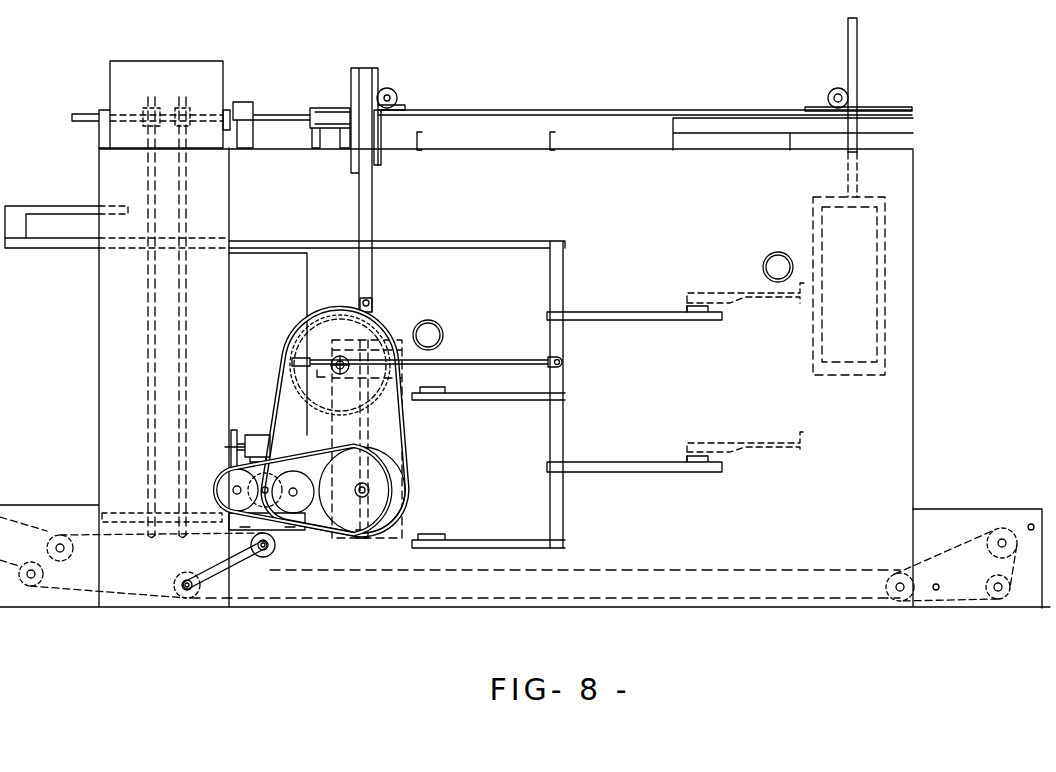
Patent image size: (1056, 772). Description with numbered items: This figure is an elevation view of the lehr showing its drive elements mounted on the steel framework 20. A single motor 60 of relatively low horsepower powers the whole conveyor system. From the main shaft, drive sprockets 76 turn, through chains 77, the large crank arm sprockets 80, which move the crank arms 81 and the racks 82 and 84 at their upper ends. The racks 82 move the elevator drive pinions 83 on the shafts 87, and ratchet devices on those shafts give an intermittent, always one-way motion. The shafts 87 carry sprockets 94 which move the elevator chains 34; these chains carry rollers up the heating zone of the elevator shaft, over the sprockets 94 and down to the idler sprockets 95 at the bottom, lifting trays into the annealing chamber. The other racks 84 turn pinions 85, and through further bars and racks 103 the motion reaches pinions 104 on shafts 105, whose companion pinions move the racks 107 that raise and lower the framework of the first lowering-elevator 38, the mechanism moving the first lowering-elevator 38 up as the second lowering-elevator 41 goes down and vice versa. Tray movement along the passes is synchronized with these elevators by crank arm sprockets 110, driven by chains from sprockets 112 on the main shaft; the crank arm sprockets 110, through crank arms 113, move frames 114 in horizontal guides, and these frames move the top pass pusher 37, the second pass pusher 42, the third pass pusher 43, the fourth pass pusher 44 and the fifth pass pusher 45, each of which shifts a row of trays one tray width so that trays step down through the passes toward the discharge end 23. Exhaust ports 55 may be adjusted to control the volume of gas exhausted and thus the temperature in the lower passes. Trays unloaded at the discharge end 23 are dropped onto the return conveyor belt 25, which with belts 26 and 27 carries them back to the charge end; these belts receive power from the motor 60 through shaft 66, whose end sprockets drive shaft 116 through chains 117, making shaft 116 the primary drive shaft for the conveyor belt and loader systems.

The steel framework 20 is at (556, 138).
The discharge end 23 is at (1009, 505).
The return conveyor belt 25 is at (950, 550).
The conveyor belt 26 is at (701, 570).
The conveyor belt 27 is at (147, 558).
The elevator chains 34 is at (150, 340).
The top pass pusher 37 is at (52, 206).
The first lowering-elevator 38 is at (813, 345).
The second lowering-elevator 41 is at (402, 426).
The second pass pusher 42 is at (720, 292).
The third pass pusher 43 is at (438, 385).
The fourth pass pusher 44 is at (752, 456).
The fifth pass pusher 45 is at (398, 540).
The exhaust ports 55 is at (776, 254).
The motor 60 is at (261, 434).
The shaft 66 is at (276, 546).
The drive sprockets 76 is at (231, 471).
The chains 77 is at (300, 468).
The crank arm sprockets 80 is at (385, 470).
The crank arms 81 is at (374, 306).
The racks 82 is at (353, 158).
The elevator drive pinions 83 is at (350, 100).
The racks 84 is at (380, 164).
The pinions 85 is at (397, 92).
The shafts 87 is at (278, 113).
The sprockets 94 is at (150, 97).
The idler sprockets 95 is at (153, 539).
The racks 103 is at (808, 106).
The pinions 104 is at (838, 88).
The shafts 105 is at (842, 98).
The racks 107 is at (858, 60).
The crank arm sprockets 110 is at (295, 371).
The sprockets 112 is at (346, 451).
The crank arms 113 is at (516, 358).
The frames 114 is at (566, 371).
The shaft 116 is at (186, 598).
The chains 117 is at (240, 572).